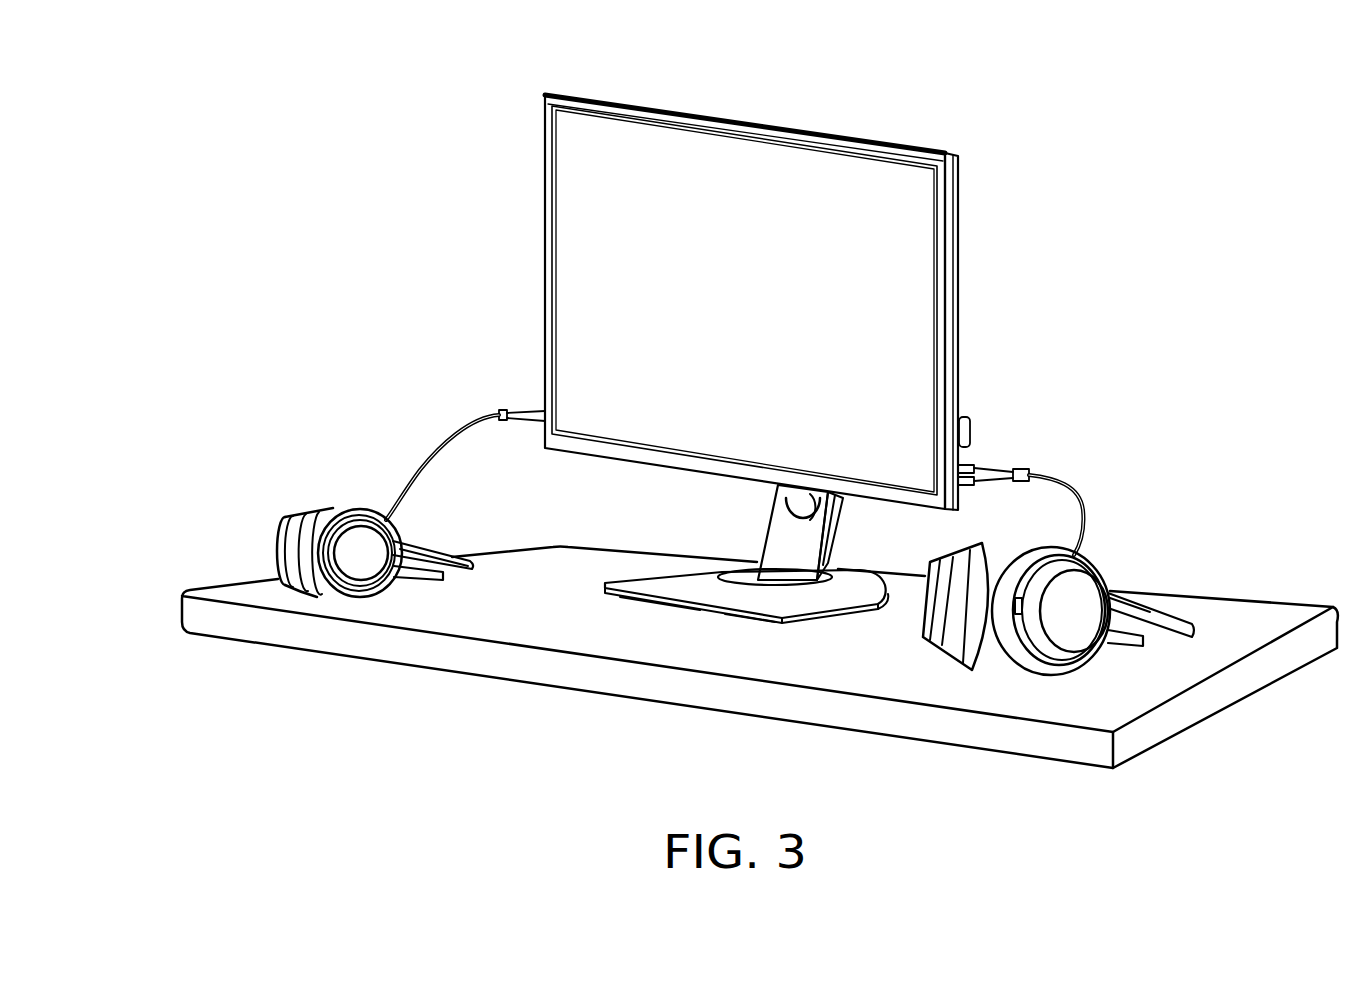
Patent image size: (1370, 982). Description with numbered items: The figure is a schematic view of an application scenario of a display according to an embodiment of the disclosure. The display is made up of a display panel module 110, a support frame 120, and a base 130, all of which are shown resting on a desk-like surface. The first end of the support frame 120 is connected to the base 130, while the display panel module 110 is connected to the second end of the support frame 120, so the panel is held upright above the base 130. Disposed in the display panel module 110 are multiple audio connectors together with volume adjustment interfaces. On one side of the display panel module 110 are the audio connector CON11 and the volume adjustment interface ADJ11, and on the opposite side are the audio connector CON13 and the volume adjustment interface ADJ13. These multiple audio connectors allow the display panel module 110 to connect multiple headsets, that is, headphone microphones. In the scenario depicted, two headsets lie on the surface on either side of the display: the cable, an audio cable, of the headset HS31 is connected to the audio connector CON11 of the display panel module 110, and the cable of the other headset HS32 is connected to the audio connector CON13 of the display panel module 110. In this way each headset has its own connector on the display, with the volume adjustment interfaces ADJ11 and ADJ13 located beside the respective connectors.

The display panel module 110 is at (762, 123).
The support frame 120 is at (780, 530).
The base 130 is at (718, 594).
The volume adjustment interface ADJ11 is at (543, 374).
The audio connector CON11 is at (540, 410).
The headset HS31 is at (308, 513).
The volume adjustment interface ADJ13 is at (970, 427).
The audio connector CON13 is at (973, 467).
The headset HS32 is at (1088, 588).